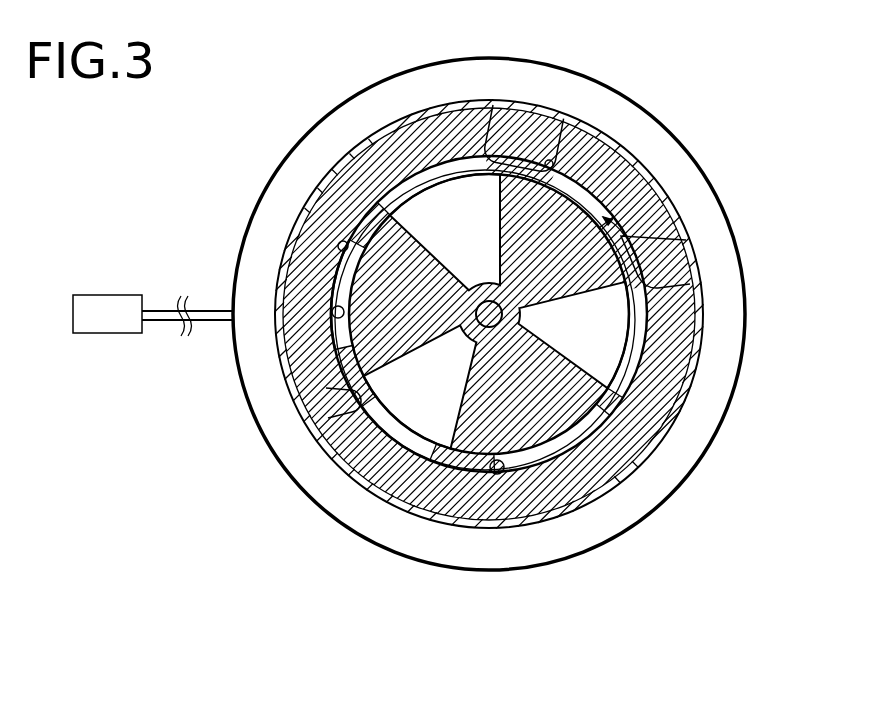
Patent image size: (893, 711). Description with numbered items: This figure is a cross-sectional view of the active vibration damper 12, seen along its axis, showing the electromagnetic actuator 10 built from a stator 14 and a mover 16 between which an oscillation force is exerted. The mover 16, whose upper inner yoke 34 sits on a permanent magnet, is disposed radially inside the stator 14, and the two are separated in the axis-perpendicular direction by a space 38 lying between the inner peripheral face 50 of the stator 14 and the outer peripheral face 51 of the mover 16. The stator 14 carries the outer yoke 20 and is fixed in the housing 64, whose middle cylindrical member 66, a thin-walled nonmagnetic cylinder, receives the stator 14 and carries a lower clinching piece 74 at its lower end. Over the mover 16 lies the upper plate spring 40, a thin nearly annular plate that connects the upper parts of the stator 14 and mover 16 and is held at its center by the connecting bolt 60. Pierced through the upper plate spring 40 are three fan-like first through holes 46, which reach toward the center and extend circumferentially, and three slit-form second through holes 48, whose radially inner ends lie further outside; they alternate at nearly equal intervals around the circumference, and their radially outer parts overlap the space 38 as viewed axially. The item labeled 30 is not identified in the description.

The electromagnetic actuator 10 is at (650, 178).
The active vibration damper 12 is at (680, 85).
The stator 14 is at (423, 185).
The mover 16 is at (430, 448).
The outer yoke 20 is at (402, 182).
The motor 30 is at (112, 313).
The upper inner yoke 34 is at (430, 410).
The space 38 is at (615, 228).
The upper plate spring 40 is at (318, 360).
The first through hole 46 is at (488, 152).
The second through hole 48 is at (548, 160).
The inner peripheral face 50 is at (332, 296).
The outer peripheral face 51 is at (352, 406).
The connecting bolt 60 is at (497, 314).
The housing 64 is at (688, 417).
The middle cylindrical member 66 is at (655, 455).
The lower clinching piece 74 is at (590, 528).